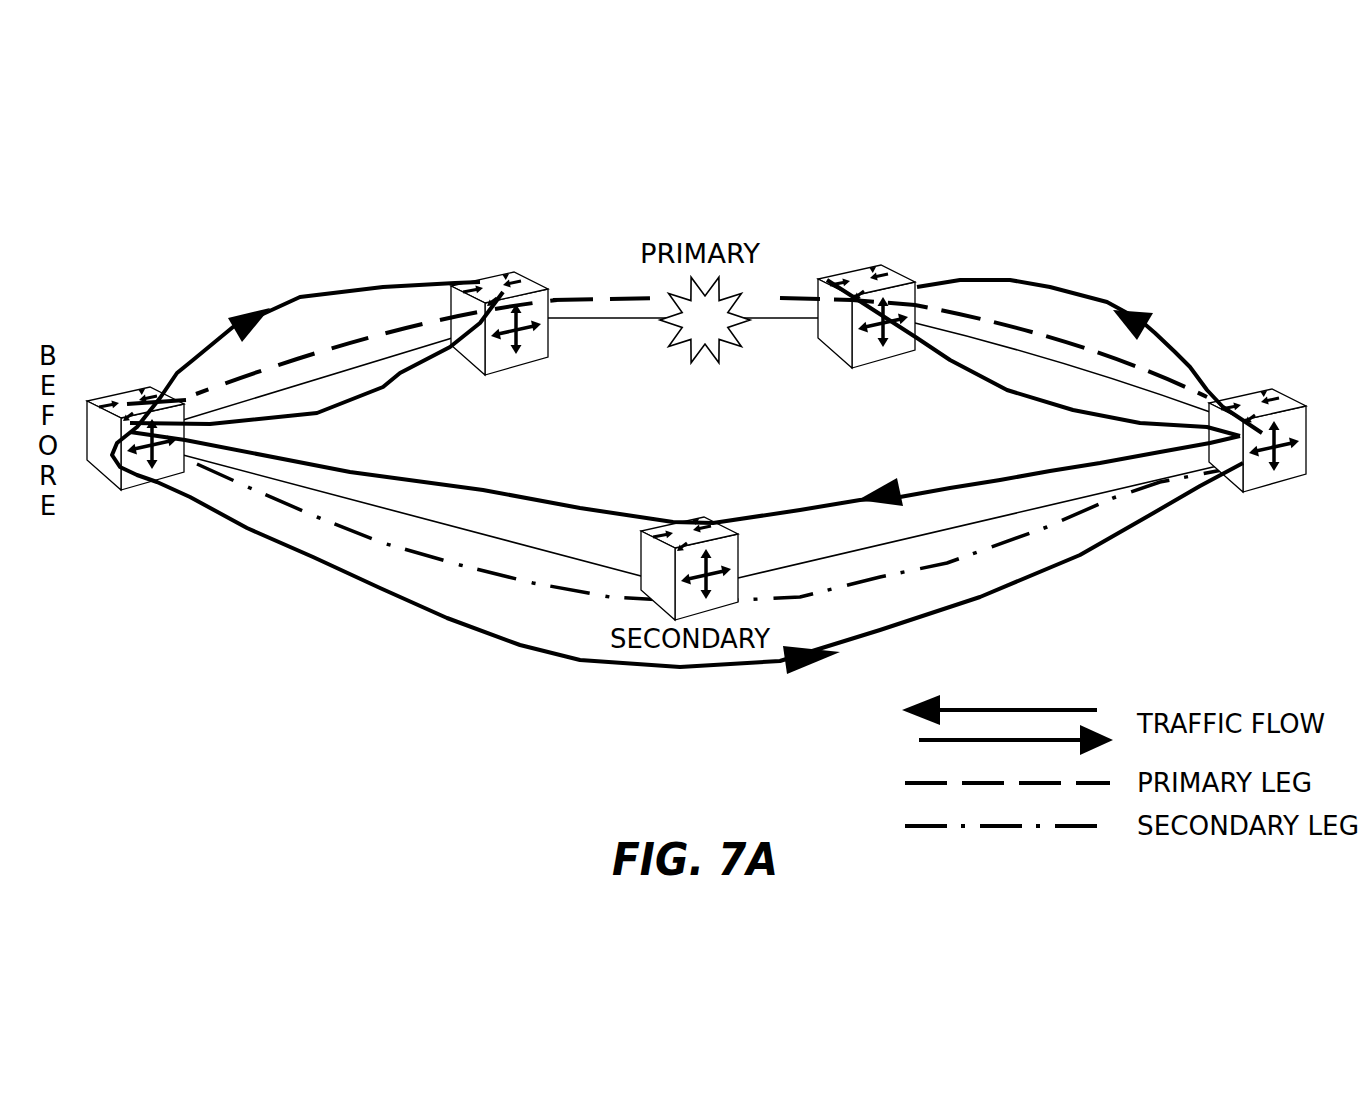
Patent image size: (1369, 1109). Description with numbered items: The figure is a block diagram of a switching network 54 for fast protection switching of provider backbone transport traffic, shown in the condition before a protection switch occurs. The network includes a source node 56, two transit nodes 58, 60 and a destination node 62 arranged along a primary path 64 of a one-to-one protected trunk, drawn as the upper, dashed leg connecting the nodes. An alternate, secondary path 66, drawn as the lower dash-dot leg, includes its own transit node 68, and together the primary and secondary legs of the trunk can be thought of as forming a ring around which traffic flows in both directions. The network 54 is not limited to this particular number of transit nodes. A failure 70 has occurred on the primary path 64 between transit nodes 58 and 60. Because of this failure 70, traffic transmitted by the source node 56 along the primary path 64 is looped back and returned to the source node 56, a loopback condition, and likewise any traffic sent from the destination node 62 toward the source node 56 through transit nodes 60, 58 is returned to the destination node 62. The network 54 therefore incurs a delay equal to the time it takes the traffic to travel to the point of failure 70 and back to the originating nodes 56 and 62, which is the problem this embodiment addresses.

The switching network 54 is at (1128, 560).
The source node 56 is at (120, 390).
The transit node 58 is at (505, 283).
The transit node 60 is at (880, 262).
The destination node 62 is at (1265, 385).
The primary path 64 is at (793, 292).
The secondary path 66 is at (975, 550).
The transit node 68 is at (713, 520).
The failure 70 is at (703, 330).